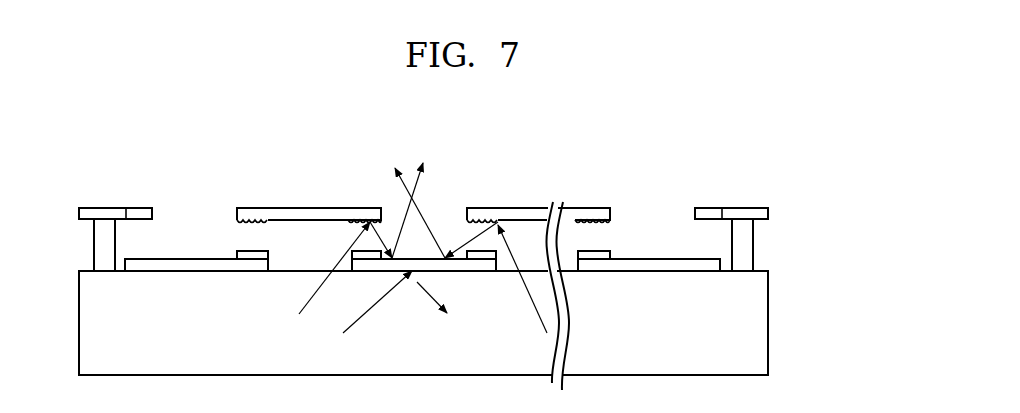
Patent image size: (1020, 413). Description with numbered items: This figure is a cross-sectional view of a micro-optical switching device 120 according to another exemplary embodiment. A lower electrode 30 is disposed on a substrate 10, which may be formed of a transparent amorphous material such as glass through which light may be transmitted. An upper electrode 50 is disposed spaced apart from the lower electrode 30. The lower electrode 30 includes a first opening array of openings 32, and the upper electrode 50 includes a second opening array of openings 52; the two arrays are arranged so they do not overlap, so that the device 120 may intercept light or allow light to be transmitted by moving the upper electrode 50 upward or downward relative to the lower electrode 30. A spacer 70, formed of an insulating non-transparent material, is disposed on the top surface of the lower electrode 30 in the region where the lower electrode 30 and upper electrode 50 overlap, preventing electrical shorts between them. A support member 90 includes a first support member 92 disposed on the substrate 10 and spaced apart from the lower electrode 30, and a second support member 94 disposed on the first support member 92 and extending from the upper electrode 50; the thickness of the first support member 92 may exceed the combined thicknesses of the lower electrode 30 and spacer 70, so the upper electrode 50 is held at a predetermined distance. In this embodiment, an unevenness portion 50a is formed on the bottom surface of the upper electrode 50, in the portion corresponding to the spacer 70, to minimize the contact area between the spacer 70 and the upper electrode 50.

The substrate 10 is at (768, 323).
The lower electrode 30 is at (660, 259).
The openings 32 is at (313, 258).
The upper electrode 50 is at (531, 182).
The unevenness portion 50a is at (476, 218).
The openings 52 is at (198, 212).
The spacer 70 is at (595, 251).
The support member 90 is at (474, 236).
The first support member 92 is at (753, 248).
The second support member 94 is at (768, 213).
The micro-optical switching device 120 is at (775, 140).